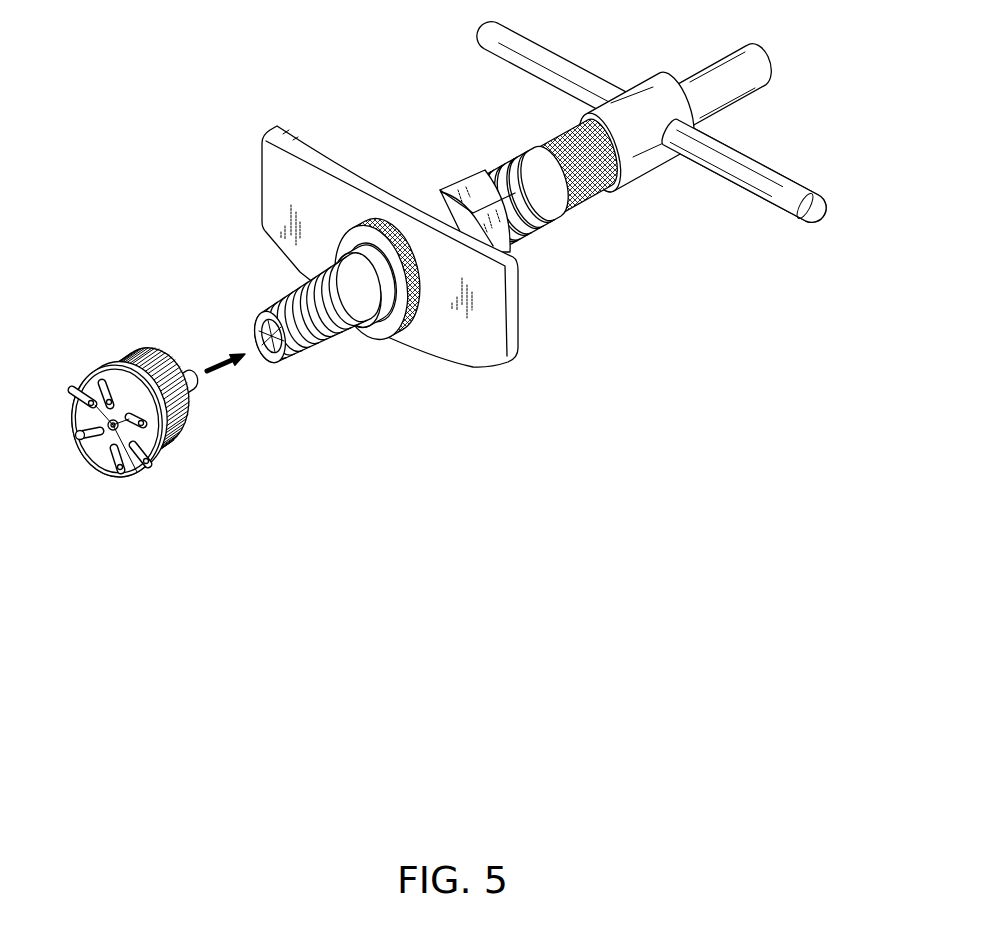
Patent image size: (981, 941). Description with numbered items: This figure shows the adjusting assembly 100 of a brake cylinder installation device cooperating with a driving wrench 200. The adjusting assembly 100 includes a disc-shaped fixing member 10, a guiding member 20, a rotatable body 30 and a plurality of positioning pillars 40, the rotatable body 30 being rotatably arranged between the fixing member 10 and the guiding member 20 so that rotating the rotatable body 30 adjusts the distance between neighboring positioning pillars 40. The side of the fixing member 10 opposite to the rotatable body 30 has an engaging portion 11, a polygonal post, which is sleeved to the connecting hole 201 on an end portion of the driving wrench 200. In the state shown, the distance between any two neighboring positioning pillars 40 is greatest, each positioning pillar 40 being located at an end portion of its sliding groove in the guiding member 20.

The adjusting assembly 100 is at (145, 397).
The fixing member 10 is at (196, 438).
The engaging portion 11 is at (189, 368).
The guiding member 20 is at (156, 465).
The rotatable body 30 is at (168, 458).
The positioning pillars 40 is at (79, 446).
The driving wrench 200 is at (538, 229).
The connecting hole 201 is at (266, 358).